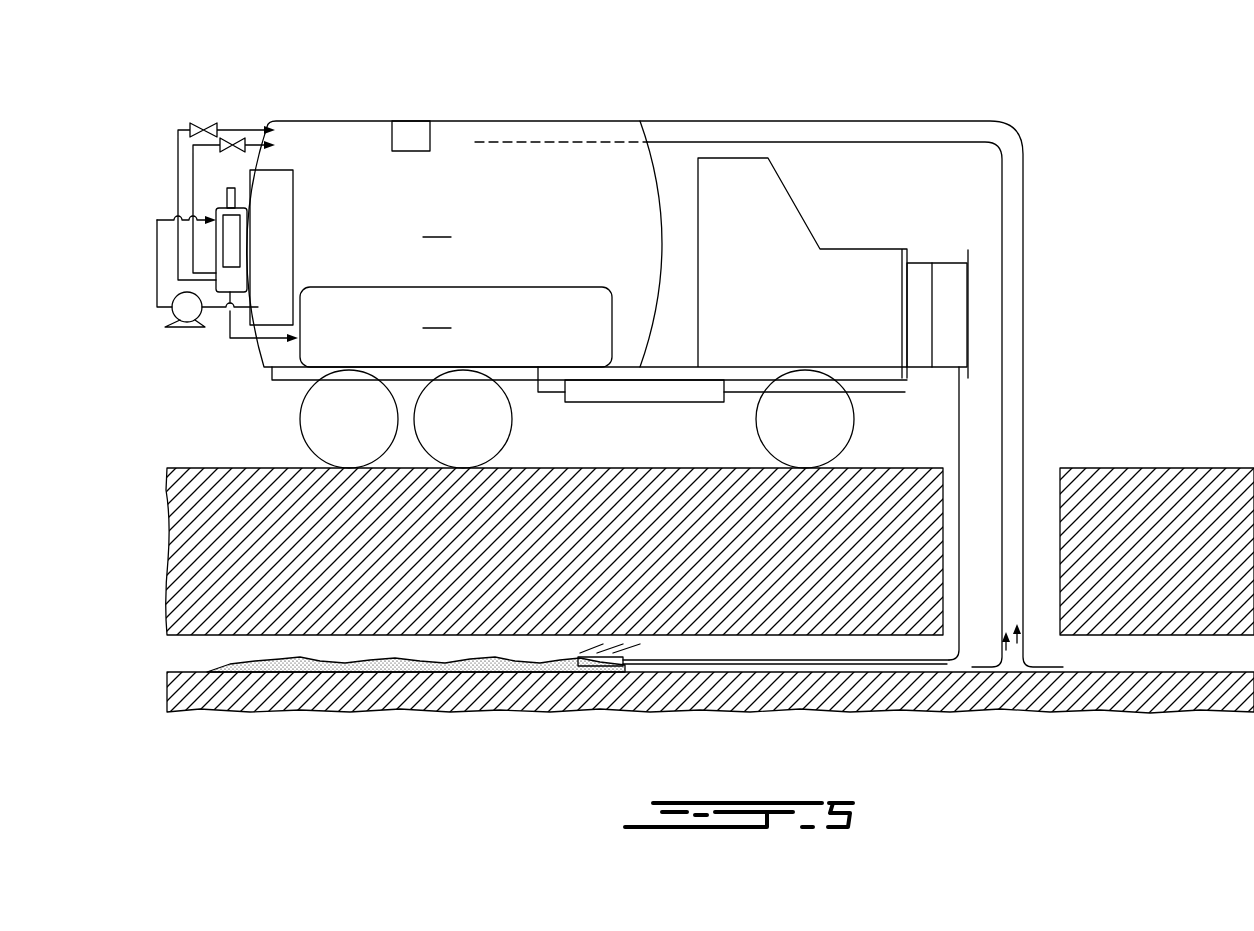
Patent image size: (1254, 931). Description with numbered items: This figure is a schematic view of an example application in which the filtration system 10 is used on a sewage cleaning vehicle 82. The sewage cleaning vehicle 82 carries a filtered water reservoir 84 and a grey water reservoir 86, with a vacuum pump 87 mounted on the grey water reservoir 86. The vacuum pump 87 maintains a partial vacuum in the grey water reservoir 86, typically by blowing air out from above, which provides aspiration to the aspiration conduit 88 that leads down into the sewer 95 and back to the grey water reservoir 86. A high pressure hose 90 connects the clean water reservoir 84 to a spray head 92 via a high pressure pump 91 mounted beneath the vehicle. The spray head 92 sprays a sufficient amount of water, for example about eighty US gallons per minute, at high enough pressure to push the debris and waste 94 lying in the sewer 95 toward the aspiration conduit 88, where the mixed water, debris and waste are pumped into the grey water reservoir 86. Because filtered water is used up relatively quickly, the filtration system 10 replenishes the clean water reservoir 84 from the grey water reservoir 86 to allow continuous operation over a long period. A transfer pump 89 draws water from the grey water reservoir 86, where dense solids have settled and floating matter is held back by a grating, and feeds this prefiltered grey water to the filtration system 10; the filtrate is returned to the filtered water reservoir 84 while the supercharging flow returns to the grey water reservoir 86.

The sewage cleaning vehicle 82 is at (841, 84).
The filtration system 10 is at (257, 237).
The filtered water reservoir 84 is at (456, 327).
The grey water reservoir 86 is at (454, 244).
The vacuum pump 87 is at (408, 137).
The aspiration conduit 88 is at (1010, 307).
The transfer pump 89 is at (182, 310).
The high pressure hose 90 is at (960, 422).
The high pressure pump 91 is at (612, 395).
The spray head 92 is at (608, 661).
The debris and waste 94 is at (510, 670).
The sewer 95 is at (838, 650).